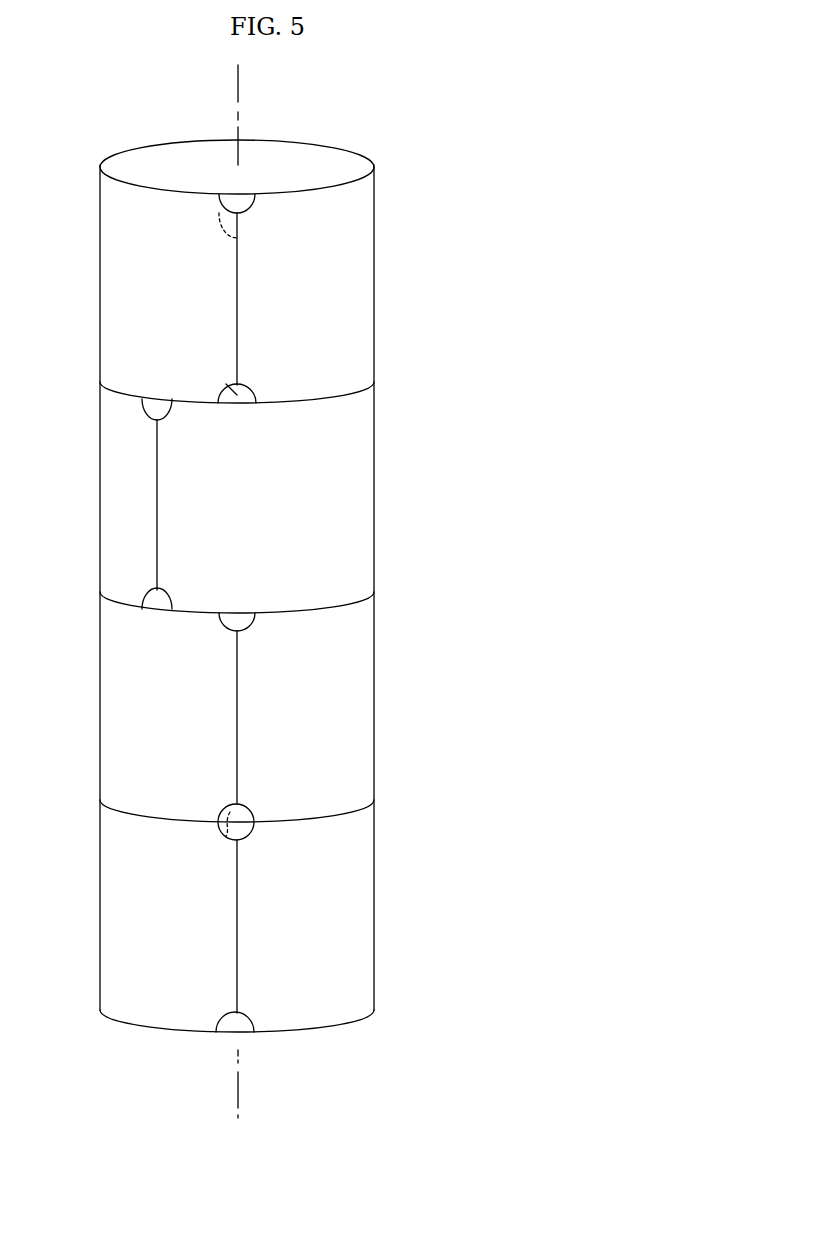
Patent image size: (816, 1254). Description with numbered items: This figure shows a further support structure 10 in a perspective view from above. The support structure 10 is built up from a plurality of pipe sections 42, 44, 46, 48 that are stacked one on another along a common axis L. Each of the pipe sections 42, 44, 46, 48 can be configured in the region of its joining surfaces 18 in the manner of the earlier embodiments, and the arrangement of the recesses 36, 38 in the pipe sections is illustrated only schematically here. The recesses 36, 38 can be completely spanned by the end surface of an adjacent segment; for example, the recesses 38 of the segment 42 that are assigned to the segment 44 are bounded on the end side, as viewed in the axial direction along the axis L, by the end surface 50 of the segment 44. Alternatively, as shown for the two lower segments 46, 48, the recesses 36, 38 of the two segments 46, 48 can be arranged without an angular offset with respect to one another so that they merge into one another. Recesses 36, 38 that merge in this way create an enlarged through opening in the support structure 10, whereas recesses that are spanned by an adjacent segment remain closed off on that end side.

The support structure 10 is at (452, 137).
The joining surfaces 18 is at (232, 322).
The recesses 36 is at (238, 237).
The recesses 38 is at (249, 403).
The pipe section 42 is at (332, 260).
The pipe section 44 is at (332, 468).
The pipe section 46 is at (332, 688).
The pipe section 48 is at (328, 903).
The end surface 50 is at (235, 397).
The axis L is at (237, 100).